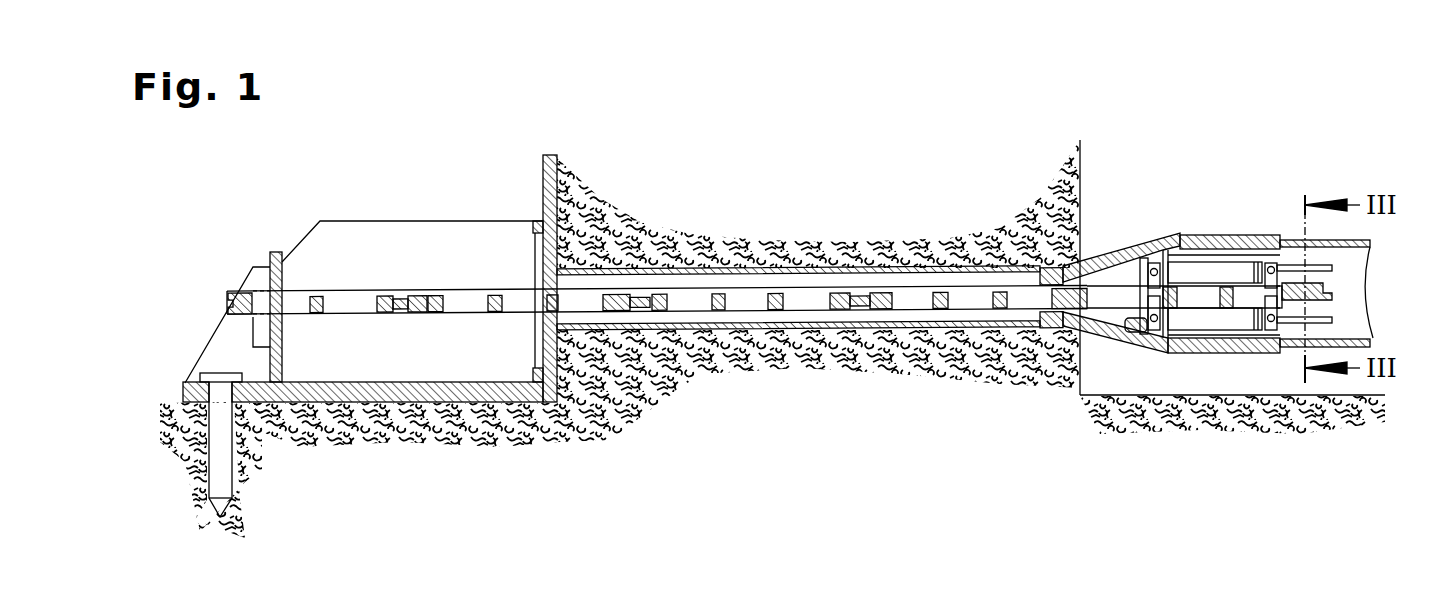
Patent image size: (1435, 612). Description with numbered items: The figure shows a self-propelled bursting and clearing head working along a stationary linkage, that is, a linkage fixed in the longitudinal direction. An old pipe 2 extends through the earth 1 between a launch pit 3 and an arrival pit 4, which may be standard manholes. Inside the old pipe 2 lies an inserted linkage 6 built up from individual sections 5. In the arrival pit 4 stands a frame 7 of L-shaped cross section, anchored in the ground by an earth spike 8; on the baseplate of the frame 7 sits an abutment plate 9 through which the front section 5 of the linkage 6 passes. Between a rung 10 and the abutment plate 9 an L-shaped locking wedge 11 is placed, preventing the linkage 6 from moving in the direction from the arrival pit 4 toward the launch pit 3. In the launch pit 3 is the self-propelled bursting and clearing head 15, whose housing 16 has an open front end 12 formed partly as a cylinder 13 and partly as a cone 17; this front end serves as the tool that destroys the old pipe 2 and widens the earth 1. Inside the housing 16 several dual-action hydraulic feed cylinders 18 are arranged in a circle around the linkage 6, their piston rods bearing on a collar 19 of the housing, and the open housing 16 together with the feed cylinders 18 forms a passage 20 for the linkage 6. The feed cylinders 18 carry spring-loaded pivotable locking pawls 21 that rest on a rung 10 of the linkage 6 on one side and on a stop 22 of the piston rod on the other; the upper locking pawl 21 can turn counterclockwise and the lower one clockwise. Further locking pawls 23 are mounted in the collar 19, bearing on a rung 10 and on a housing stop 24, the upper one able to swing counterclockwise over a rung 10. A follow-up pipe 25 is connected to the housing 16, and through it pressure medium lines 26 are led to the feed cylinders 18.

The earth 1 is at (810, 352).
The old pipe 2 is at (820, 268).
The launch pit 3 is at (1138, 195).
The arrival pit 4 is at (512, 192).
The sections 5 is at (915, 300).
The linkage 6 is at (482, 312).
The frame 7 is at (358, 394).
The earth spike 8 is at (215, 475).
The abutment plate 9 is at (278, 252).
The rung 10 is at (238, 302).
The locking wedge 11 is at (256, 283).
The front end 12 is at (1040, 328).
The cylinder 13 is at (1045, 273).
The bursting and clearing head 15 is at (1176, 228).
The housing 16 is at (1237, 238).
The cone 17 is at (1122, 262).
The hydraulic feed cylinders 18 is at (1205, 268).
The collar 19 is at (1180, 338).
The passage 20 is at (1332, 285).
The locking pawls 21 is at (1288, 262).
The stop 22 is at (1283, 292).
The locking pawls 23 is at (1153, 338).
The housing stop 24 is at (1133, 336).
The follow-up pipe 25 is at (1337, 241).
The pressure medium lines 26 is at (1318, 260).